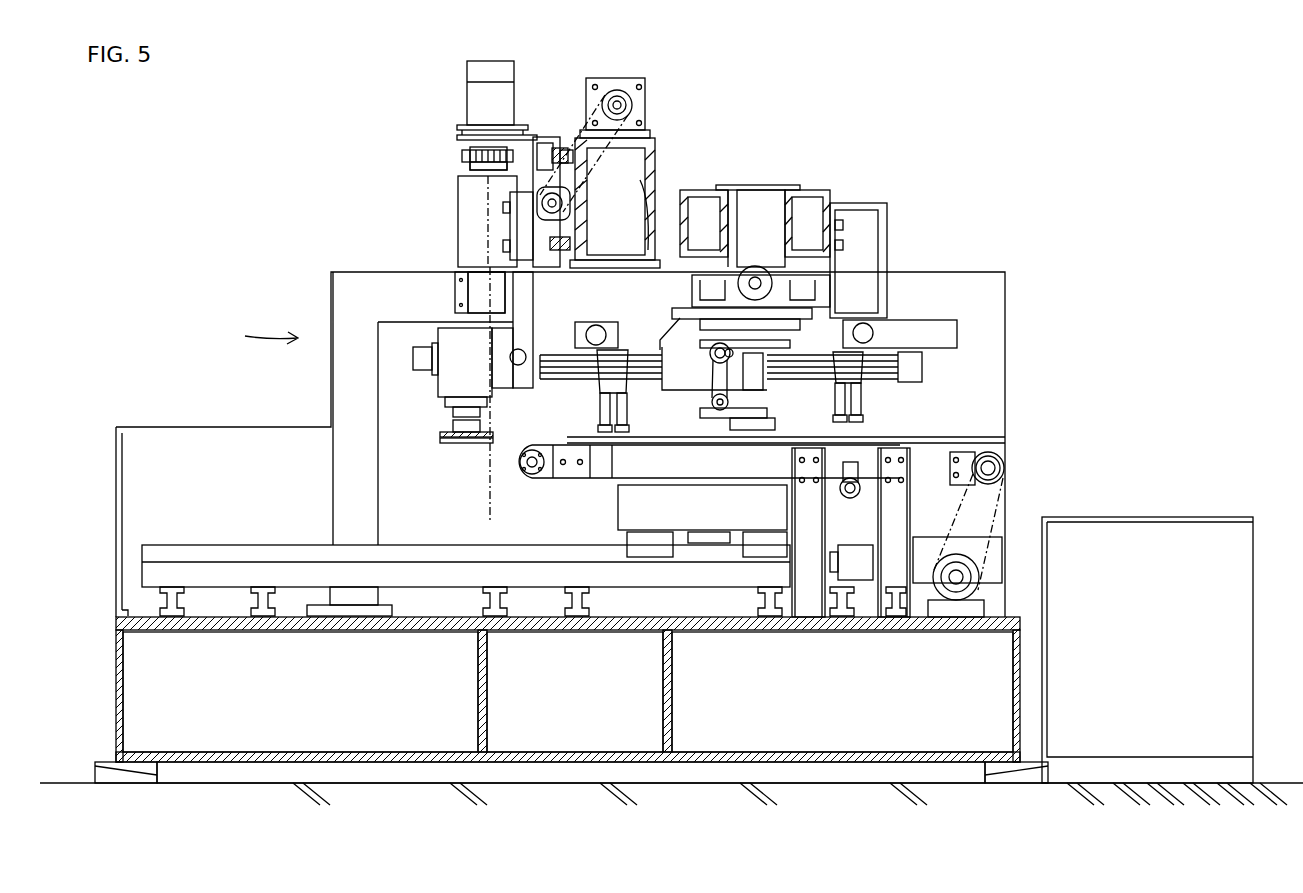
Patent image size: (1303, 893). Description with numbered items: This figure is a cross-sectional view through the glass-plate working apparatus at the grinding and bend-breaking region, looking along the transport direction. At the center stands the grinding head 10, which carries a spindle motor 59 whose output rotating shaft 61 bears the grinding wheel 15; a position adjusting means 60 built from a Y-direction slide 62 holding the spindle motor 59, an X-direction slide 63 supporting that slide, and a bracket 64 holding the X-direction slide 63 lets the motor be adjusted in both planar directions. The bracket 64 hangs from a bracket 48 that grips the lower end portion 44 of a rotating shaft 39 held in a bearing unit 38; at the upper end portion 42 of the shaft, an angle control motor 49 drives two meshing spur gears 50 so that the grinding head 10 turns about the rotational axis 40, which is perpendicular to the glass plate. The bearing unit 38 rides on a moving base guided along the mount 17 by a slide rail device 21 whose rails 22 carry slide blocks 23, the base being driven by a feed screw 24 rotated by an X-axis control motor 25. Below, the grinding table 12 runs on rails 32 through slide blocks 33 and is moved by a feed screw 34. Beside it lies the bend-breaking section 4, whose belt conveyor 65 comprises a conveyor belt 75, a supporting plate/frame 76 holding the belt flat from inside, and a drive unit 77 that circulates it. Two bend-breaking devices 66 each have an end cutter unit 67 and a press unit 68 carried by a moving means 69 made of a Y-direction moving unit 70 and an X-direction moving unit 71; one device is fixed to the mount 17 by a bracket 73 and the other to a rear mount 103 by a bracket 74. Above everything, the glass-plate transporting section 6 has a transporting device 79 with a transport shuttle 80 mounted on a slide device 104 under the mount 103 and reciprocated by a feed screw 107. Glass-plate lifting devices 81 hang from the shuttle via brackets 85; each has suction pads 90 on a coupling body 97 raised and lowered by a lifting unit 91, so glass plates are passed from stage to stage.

The bend-breaking section 4 is at (259, 335).
The glass-plate transporting section 6 is at (773, 223).
The grinding head 10 is at (510, 360).
The grinding table 12 is at (712, 570).
The grinding wheel 15 is at (478, 445).
The mount 17 is at (655, 165).
The slide rail device 21 is at (548, 150).
The rails 22 is at (567, 152).
The slide blocks 23 is at (545, 160).
The feed screw 24 is at (565, 205).
The X-axis control motor 25 is at (617, 100).
The rails 32 is at (438, 550).
The slide blocks 33 is at (765, 545).
The feed screw 34 is at (840, 565).
The bearing unit 38 is at (475, 226).
The rotating shaft 39 is at (485, 178).
The rotational axis 40 is at (488, 495).
The upper end portion 42 is at (472, 165).
The lower end portion 44 is at (457, 275).
The bracket 48 is at (475, 297).
The angle control motor 49 is at (492, 90).
The spur gears 50 is at (465, 152).
The spindle motor 59 is at (452, 352).
The position adjusting means 60 is at (455, 380).
The output rotating shaft 61 is at (468, 436).
The Y-direction slide 62 is at (440, 375).
The X-direction slide 63 is at (466, 421).
The bracket 64 is at (525, 320).
The belt conveyor 65 is at (648, 448).
The bend-breaking devices 66 is at (580, 360).
The end cutter unit 67 is at (850, 405).
The press unit 68 is at (860, 420).
The moving means 69 is at (923, 363).
The Y-direction moving unit 70 is at (605, 370).
The X-direction moving unit 71 is at (597, 328).
The bracket 73 is at (648, 255).
The bracket 74 is at (885, 225).
The conveyor belt 75 is at (903, 500).
The supporting plate/frame 76 is at (930, 470).
The drive unit 77 is at (958, 600).
The transporting device 79 is at (840, 285).
The transport shuttle 80 is at (823, 290).
The glass-plate lifting device 81 is at (782, 402).
The bracket 85 is at (680, 328).
The suction pads 90 is at (690, 448).
The lifting unit 91 is at (762, 360).
The coupling body 97 is at (625, 405).
The mount 103 is at (805, 205).
The slide device 104 is at (800, 290).
The feed screw 107 is at (756, 278).